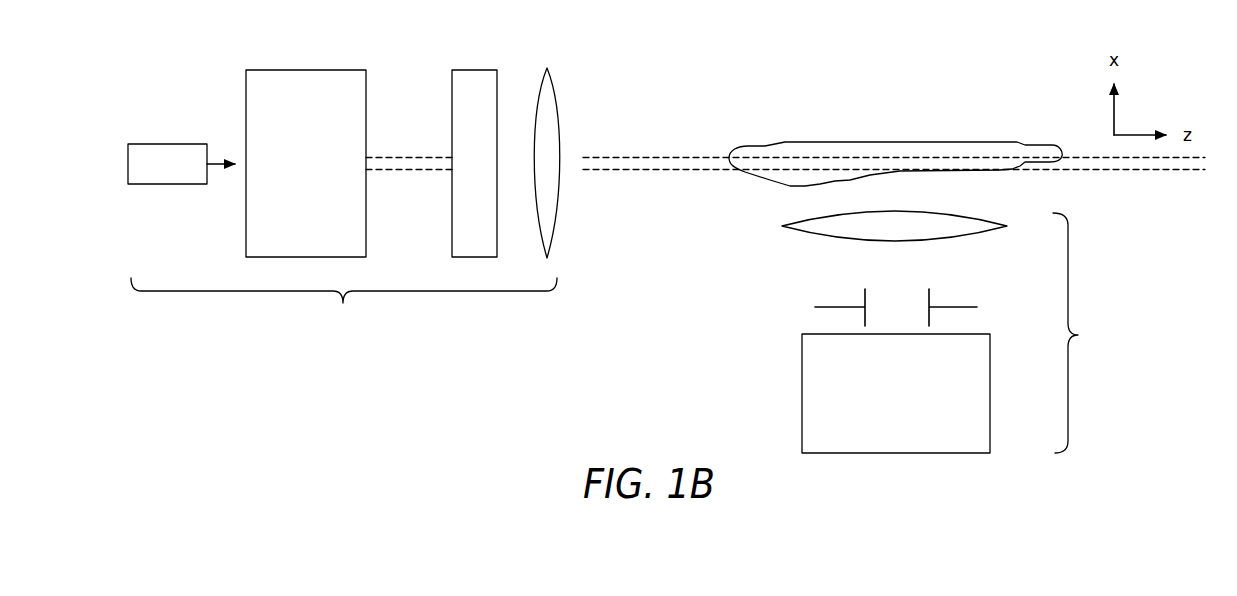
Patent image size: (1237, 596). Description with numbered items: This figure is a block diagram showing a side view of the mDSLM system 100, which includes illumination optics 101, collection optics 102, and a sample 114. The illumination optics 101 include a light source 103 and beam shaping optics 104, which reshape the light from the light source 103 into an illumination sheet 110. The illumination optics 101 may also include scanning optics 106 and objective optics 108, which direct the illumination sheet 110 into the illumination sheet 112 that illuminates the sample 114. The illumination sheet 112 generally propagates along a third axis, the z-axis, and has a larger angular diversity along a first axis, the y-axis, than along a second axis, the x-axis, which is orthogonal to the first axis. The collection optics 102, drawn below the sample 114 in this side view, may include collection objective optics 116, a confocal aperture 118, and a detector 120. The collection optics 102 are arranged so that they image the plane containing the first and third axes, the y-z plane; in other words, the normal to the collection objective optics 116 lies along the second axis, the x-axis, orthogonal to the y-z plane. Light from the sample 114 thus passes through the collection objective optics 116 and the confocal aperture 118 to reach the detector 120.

The mDSLM system 100 is at (151, 78).
The illumination optics 101 is at (344, 307).
The collection optics 102 is at (1087, 333).
The light source 103 is at (168, 144).
The beam shaping optics 104 is at (313, 70).
The scanning optics 106 is at (475, 70).
The objective optics 108 is at (547, 68).
The illumination sheet 110 is at (417, 157).
The illumination sheet 112 is at (625, 157).
The sample 114 is at (919, 142).
The collection objective optics 116 is at (810, 233).
The confocal aperture 118 is at (835, 307).
The detector 120 is at (869, 453).